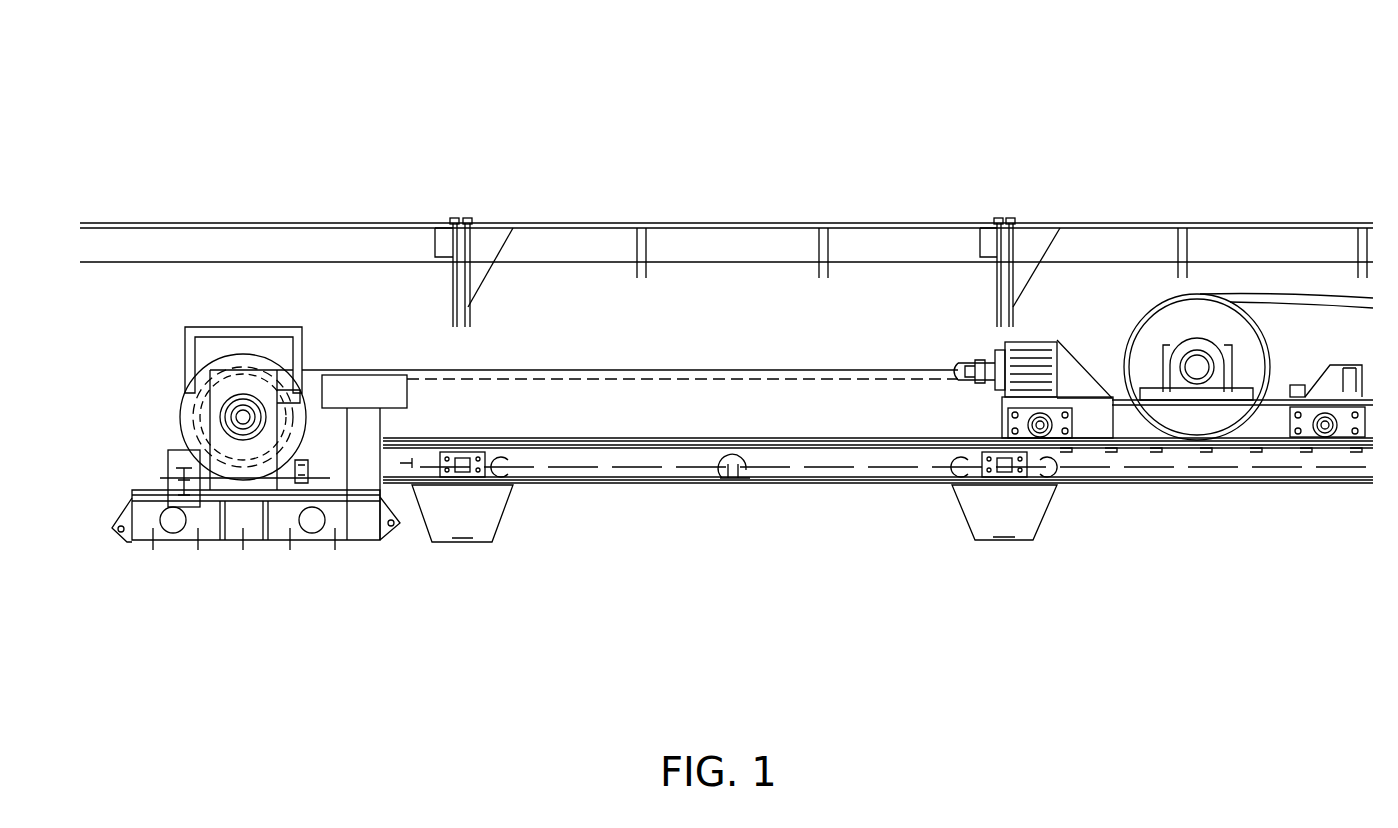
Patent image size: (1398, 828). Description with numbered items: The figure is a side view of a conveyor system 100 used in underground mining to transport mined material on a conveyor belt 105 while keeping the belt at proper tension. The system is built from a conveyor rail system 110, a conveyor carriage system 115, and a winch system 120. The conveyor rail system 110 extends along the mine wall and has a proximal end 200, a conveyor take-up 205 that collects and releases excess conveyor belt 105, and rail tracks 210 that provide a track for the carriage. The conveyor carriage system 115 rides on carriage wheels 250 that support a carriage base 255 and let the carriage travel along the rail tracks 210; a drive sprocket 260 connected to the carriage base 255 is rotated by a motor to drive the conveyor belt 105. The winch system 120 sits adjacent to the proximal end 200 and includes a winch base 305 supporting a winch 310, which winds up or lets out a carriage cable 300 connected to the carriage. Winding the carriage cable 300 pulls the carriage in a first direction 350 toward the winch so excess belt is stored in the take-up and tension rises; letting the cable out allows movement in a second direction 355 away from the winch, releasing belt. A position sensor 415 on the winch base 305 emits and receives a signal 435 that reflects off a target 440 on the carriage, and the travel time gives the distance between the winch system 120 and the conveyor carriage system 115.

The conveyor system 100 is at (362, 124).
The conveyor belt 105 is at (1280, 296).
The conveyor rail system 110 is at (633, 487).
The conveyor carriage system 115 is at (1110, 312).
The winch system 120 is at (115, 330).
The proximal end 200 is at (473, 548).
The conveyor take-up 205 is at (455, 452).
The rail tracks 210 is at (618, 438).
The carriage wheels 250 is at (1042, 432).
The carriage base 255 is at (1108, 420).
The drive sprocket 260 is at (1197, 367).
The carriage cable 300 is at (805, 369).
The winch base 305 is at (168, 545).
The winch 310 is at (181, 415).
The first direction 350 is at (148, 701).
The second direction 355 is at (148, 741).
The position sensor 415 is at (395, 411).
The signal 435 is at (526, 378).
The target 440 is at (985, 394).